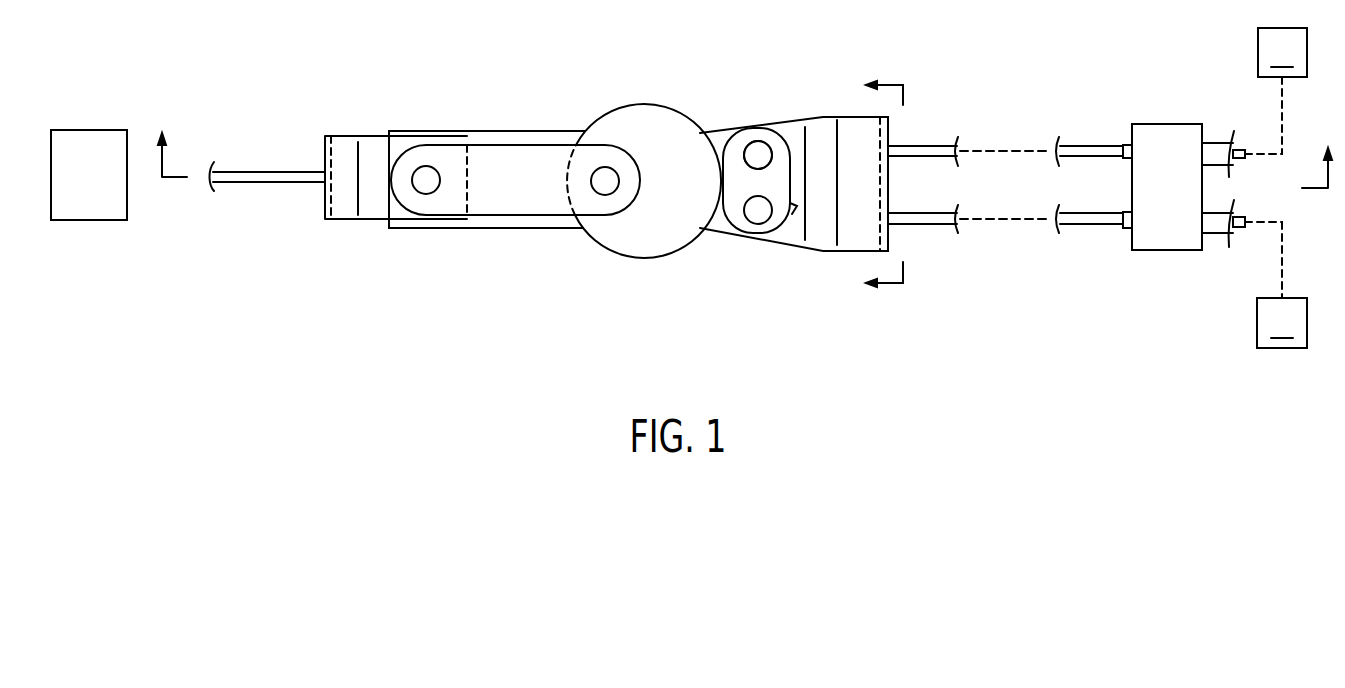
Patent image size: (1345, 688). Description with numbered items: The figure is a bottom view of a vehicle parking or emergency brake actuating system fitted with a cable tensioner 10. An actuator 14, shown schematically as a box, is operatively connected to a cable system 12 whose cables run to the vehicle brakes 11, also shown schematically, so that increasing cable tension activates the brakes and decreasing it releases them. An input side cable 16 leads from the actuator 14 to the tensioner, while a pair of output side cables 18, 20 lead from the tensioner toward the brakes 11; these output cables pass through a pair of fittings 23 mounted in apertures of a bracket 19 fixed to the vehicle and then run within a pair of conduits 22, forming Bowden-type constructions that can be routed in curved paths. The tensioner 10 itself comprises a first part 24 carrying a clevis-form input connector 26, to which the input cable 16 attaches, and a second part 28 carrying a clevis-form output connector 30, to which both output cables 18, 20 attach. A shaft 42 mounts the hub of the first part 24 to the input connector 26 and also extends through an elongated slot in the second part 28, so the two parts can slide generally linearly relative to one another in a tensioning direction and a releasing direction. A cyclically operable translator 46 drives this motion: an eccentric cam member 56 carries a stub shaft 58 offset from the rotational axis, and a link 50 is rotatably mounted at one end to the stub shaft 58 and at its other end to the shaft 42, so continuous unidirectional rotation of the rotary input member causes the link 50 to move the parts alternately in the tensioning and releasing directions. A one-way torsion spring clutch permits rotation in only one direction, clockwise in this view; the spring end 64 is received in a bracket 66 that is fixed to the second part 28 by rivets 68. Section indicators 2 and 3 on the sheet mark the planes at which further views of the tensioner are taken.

The section line 2- 2 is at (744, 139).
The section line 3- 3 is at (874, 185).
The cable tensioner 10 is at (575, 107).
The brakes 11 is at (1282, 188).
The cable system 12 is at (934, 93).
The actuator 14 is at (90, 138).
The input side cable 16 is at (248, 181).
The output side cable 18 is at (940, 145).
The bracket 19 is at (1162, 243).
The output side cable 20 is at (933, 227).
The conduits 22 is at (1213, 153).
The fittings 23 is at (1128, 145).
The first part 24 is at (373, 110).
The input connector 26 is at (375, 207).
The second part 28 is at (741, 97).
The output connector 30 is at (820, 230).
The shaft 42 is at (430, 170).
The cyclically operable translator 46 is at (635, 280).
The link 50 is at (510, 200).
The eccentric cam member 56 is at (657, 103).
The stub shaft 58 is at (602, 184).
The end of torsion spring 64 is at (792, 214).
The bracket 66 is at (762, 151).
The rivets 68 is at (760, 155).